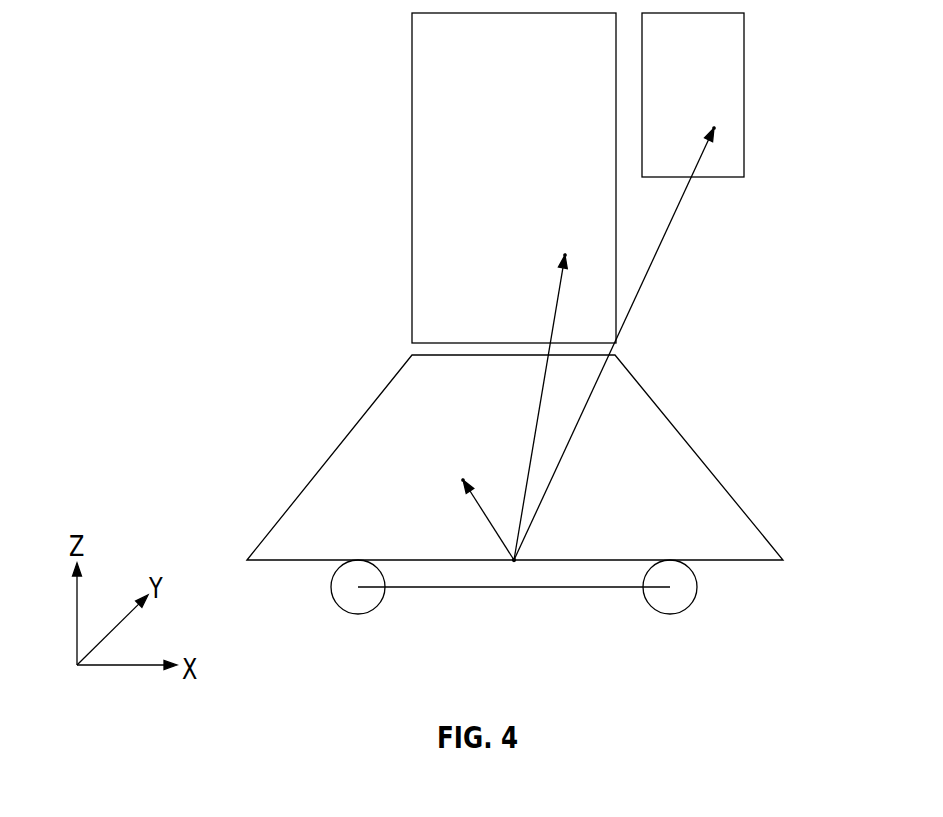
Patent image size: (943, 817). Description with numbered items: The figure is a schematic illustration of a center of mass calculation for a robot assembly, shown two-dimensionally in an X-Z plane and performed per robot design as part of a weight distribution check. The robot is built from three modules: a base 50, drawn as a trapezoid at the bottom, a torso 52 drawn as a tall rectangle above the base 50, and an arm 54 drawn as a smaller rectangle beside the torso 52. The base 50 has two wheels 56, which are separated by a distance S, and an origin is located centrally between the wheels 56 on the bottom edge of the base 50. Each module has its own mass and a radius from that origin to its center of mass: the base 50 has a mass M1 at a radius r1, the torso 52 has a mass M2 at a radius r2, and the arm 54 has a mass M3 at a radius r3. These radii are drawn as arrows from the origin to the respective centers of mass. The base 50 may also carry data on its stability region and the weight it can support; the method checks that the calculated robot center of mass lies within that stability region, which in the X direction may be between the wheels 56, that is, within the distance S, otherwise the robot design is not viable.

The base 50 is at (672, 447).
The torso 52 is at (430, 86).
The arm 54 is at (730, 50).
The wheels 56 is at (363, 600).
The distance between wheels S is at (514, 588).
The mass of base M1 is at (465, 459).
The mass of torso M2 is at (565, 239).
The mass of arm M3 is at (712, 110).
The radius to center of mass of base r1 is at (485, 520).
The radius to center of mass of torso r2 is at (539, 407).
The radius to center of mass of arm r3 is at (614, 344).